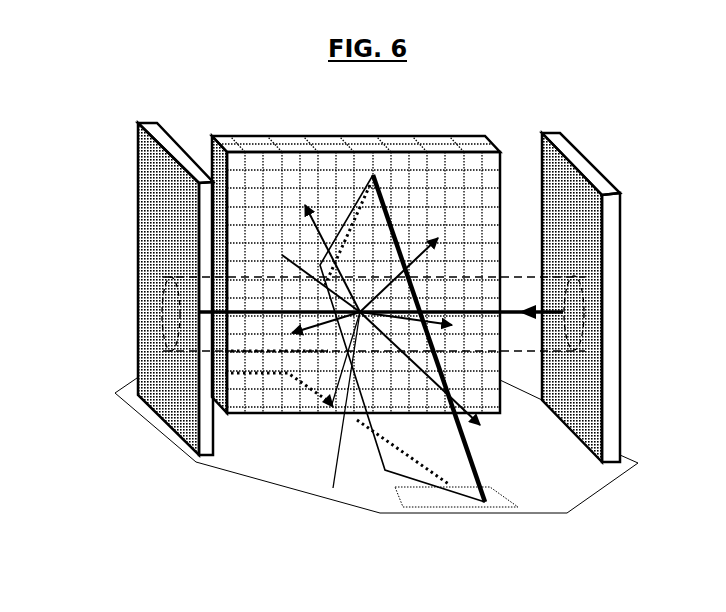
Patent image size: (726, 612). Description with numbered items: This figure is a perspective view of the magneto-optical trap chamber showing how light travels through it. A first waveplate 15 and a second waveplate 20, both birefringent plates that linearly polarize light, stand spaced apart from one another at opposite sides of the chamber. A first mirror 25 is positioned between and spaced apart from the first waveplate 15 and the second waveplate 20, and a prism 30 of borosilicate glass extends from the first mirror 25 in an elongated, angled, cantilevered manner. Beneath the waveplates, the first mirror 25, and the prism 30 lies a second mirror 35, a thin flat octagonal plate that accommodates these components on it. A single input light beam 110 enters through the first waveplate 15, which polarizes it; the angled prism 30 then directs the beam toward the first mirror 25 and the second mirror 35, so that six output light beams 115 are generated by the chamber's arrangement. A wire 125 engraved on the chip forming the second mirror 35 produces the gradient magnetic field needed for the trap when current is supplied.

The first waveplate 15 is at (618, 238).
The second waveplate 20 is at (147, 204).
The first mirror 25 is at (438, 140).
The prism 30 is at (383, 478).
The second mirror 35 is at (583, 485).
The single input light beam 110 is at (527, 280).
The six output light beams 115 is at (330, 227).
The wire 125 is at (413, 495).